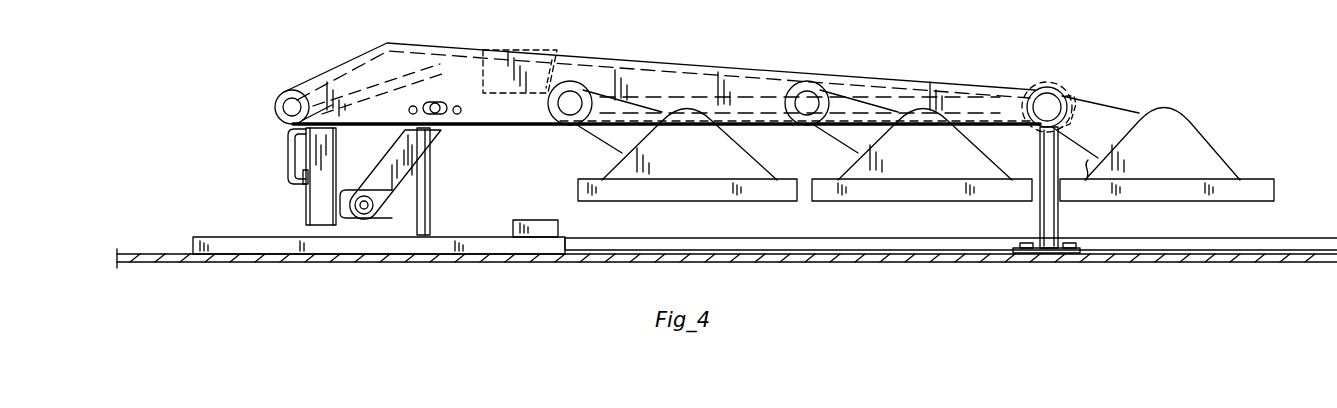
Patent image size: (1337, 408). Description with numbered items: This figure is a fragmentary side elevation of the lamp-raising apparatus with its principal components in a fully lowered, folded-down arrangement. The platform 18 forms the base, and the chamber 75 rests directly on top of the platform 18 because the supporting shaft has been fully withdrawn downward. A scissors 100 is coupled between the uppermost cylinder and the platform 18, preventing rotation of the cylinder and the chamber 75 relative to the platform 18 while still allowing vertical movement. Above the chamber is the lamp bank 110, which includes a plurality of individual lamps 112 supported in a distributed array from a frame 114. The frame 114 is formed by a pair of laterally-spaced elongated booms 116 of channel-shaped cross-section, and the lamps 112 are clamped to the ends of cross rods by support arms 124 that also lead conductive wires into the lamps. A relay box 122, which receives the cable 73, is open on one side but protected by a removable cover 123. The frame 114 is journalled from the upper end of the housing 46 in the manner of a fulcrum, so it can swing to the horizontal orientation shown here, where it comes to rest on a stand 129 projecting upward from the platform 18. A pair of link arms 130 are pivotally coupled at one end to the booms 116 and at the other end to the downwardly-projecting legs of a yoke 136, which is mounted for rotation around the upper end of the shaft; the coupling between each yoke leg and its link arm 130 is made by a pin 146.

The platform 18 is at (130, 254).
The housing 46 is at (430, 185).
The cable 73 is at (288, 148).
The chamber 75 is at (207, 236).
The scissors 100 is at (1163, 256).
The lamp bank 110 is at (1210, 122).
The lamps 112 is at (682, 190).
The frame 114 is at (737, 60).
The booms 116 is at (630, 58).
The relay box 122 is at (523, 70).
The removable cover 123 is at (509, 47).
The support arms 124 is at (607, 135).
The stand 129 is at (1060, 217).
The link arms 130 is at (440, 135).
The yoke 136 is at (350, 177).
The pin 146 is at (357, 222).